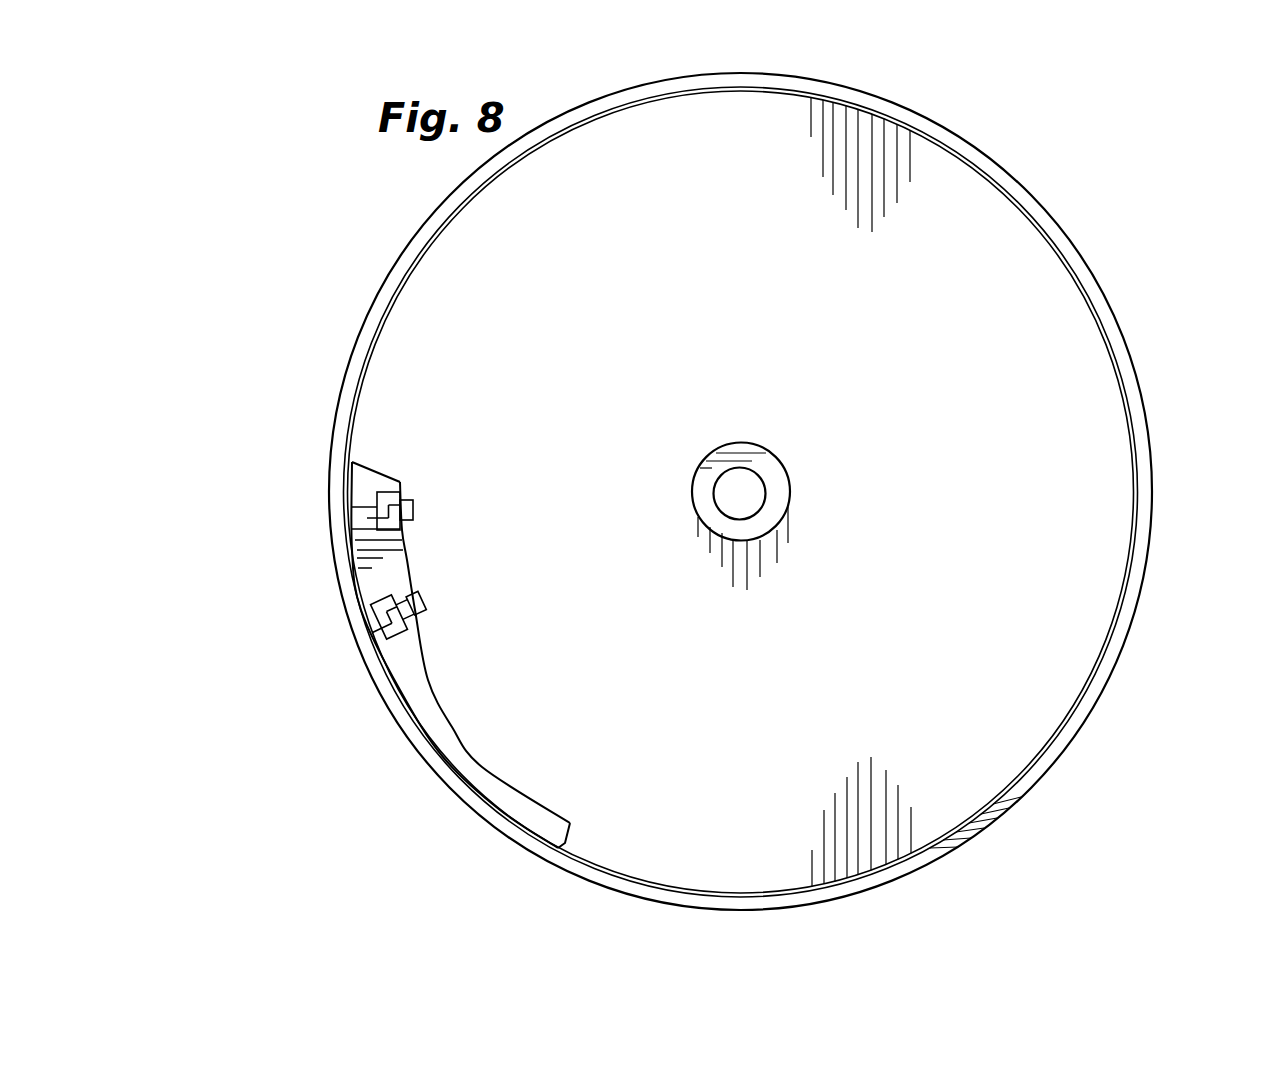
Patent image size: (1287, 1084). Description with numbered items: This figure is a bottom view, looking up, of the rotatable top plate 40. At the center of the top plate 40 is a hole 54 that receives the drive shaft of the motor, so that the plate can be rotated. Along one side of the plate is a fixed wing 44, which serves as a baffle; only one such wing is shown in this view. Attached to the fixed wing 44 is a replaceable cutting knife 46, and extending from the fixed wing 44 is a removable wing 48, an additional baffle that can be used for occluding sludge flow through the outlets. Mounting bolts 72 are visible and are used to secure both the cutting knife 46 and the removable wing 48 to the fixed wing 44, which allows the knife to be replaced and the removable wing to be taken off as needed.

The rotatable top plate 40 is at (871, 387).
The fixed wing 44 is at (367, 583).
The cutting knife 46 is at (360, 482).
The removable wing 48 is at (457, 755).
The hole 54 is at (745, 490).
The mounting bolts 72 is at (413, 503).